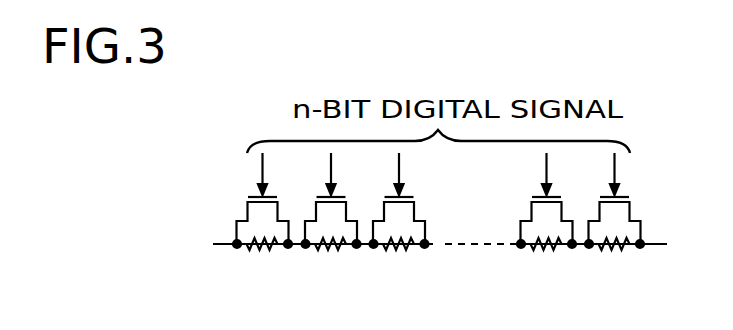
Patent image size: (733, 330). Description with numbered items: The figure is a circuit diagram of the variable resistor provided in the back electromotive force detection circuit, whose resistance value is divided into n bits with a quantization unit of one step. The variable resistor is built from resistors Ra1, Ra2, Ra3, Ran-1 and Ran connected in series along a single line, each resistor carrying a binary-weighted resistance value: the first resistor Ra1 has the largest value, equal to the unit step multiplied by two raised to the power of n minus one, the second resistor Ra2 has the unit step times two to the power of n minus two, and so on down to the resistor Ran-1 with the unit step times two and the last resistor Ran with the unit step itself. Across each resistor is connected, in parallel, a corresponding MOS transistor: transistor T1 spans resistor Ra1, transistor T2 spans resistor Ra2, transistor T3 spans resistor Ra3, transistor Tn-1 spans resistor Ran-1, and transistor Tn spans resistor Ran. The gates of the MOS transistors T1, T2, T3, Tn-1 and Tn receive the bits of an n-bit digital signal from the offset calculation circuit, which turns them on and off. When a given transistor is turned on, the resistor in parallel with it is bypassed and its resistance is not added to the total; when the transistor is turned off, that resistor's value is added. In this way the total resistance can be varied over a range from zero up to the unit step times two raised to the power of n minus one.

The MOS transistor T1 is at (271, 198).
The MOS transistor T2 is at (340, 198).
The MOS transistor T3 is at (407, 198).
The MOS transistor Tn-1 is at (523, 198).
The MOS transistor Tn is at (623, 198).
The resistor Ra1 is at (264, 264).
The resistor Ra2 is at (331, 264).
The resistor Ra3 is at (399, 264).
The resistor Ran-1 is at (541, 264).
The resistor Ran is at (615, 264).